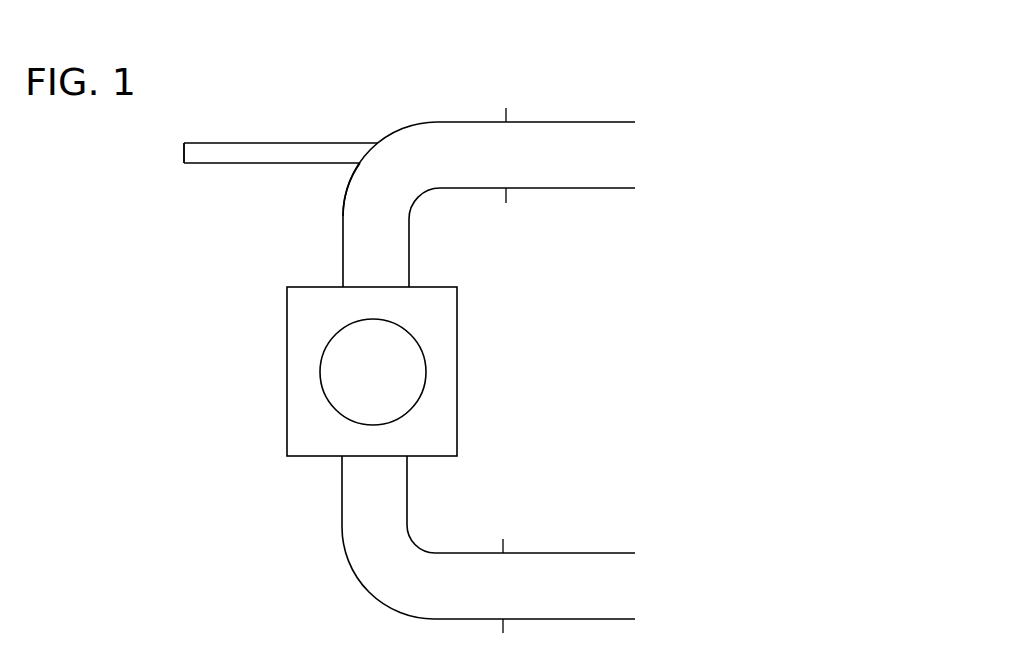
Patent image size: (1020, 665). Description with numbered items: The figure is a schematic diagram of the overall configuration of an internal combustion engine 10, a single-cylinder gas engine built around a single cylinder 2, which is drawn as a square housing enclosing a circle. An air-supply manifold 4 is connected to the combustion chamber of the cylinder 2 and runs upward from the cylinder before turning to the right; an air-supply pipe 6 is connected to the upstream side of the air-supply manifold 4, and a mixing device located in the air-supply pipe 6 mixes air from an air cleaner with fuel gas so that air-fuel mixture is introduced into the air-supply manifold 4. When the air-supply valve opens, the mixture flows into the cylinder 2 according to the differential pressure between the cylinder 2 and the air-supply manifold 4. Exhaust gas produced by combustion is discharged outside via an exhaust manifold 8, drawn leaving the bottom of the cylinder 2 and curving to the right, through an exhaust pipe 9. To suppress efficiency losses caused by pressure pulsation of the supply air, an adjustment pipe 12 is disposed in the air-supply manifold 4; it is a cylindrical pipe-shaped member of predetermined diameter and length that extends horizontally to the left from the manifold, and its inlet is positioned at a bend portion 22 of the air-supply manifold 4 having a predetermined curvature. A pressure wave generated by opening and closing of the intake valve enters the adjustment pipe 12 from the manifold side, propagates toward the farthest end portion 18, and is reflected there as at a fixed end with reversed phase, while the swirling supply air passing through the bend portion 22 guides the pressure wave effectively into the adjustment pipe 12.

The internal combustion engine 10 is at (640, 86).
The adjustment pipe 12 is at (282, 142).
The farthest end portion 18 is at (184, 151).
The bend portion 22 is at (352, 172).
The air-supply manifold 4 is at (470, 188).
The air-supply pipe 6 is at (563, 188).
The cylinder 2 is at (320, 372).
The exhaust manifold 8 is at (341, 523).
The exhaust pipe 9 is at (555, 552).